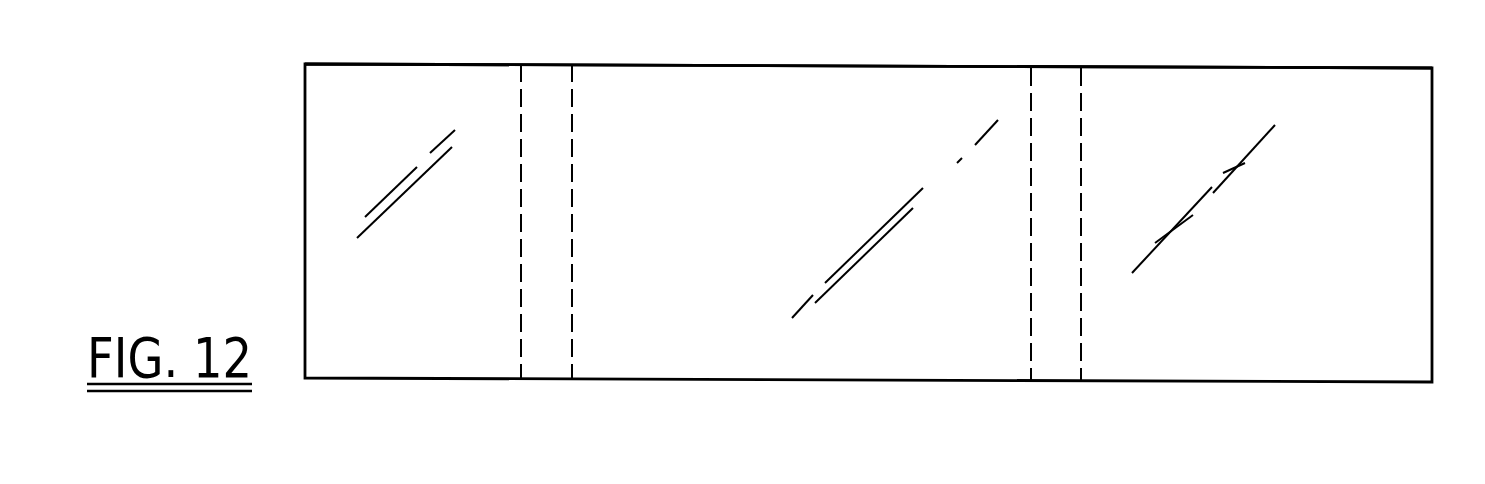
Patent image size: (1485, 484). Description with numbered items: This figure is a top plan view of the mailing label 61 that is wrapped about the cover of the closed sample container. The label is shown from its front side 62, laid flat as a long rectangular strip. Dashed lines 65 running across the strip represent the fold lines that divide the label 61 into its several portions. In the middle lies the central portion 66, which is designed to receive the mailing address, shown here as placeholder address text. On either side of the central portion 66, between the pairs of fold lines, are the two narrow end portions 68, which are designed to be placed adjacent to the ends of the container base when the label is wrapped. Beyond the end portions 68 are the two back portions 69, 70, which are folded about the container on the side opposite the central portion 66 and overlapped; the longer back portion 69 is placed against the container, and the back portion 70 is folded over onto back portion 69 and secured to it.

The mailing label 61 is at (1008, 44).
The front side 62 is at (877, 87).
The perforation lines 65 is at (520, 348).
The central portion 66 is at (975, 332).
The end portions 68 is at (802, 246).
The back portion 69 is at (1376, 299).
The back portion 70 is at (337, 146).